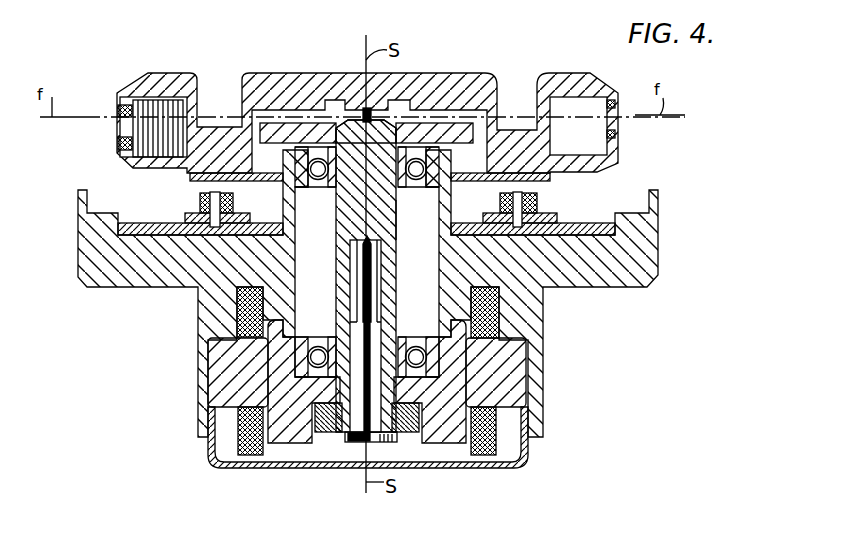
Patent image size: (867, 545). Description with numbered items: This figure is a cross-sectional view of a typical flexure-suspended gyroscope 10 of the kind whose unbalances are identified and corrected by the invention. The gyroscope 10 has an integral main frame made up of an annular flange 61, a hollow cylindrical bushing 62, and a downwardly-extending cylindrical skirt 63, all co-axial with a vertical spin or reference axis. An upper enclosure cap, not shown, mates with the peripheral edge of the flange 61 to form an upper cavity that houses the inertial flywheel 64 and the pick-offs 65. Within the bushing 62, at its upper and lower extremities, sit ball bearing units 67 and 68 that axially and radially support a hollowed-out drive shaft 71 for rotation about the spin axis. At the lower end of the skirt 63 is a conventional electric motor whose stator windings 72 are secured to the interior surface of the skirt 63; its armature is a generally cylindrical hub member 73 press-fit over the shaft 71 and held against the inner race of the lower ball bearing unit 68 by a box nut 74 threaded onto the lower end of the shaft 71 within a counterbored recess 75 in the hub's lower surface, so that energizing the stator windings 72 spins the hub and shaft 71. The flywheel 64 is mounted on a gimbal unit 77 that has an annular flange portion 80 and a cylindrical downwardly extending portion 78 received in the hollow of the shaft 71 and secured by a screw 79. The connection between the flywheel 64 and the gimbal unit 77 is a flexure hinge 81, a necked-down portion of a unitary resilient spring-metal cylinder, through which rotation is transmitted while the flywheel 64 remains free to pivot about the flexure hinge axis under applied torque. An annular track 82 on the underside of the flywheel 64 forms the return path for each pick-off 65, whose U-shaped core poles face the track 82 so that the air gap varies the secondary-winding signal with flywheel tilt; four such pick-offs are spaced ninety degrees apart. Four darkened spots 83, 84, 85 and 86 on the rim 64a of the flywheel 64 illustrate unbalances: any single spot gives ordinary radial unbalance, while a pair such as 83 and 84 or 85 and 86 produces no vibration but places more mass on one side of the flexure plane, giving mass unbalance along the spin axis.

The flexure-suspended gyroscope 10 is at (130, 352).
The annular flange 61 is at (80, 260).
The hollow cylindrical bushing 62 is at (297, 222).
The downwardly-extending cylindrical skirt 63 is at (202, 410).
The inertial flywheel 64 is at (180, 73).
The rim 64a is at (118, 127).
The pick-offs 65 is at (236, 205).
The upper ball bearing unit 67 is at (307, 188).
The lower ball bearing unit 68 is at (423, 334).
The drive shaft 71 is at (397, 247).
The stator windings 72 is at (252, 458).
The hub member 73 is at (290, 393).
The box nut 74 is at (317, 430).
The counterbored recess 75 is at (433, 430).
The gimbal unit 77 is at (352, 133).
The cylindrical downwardly extending portion 78 is at (382, 215).
The screw 79 is at (372, 290).
The annular flange portion 80 is at (283, 138).
The flexure hinge 81 is at (364, 110).
The annular track 82 is at (190, 179).
The darkened spot 83 is at (157, 89).
The darkened spot 84 is at (616, 103).
The darkened spot 85 is at (118, 141).
The darkened spot 86 is at (618, 136).